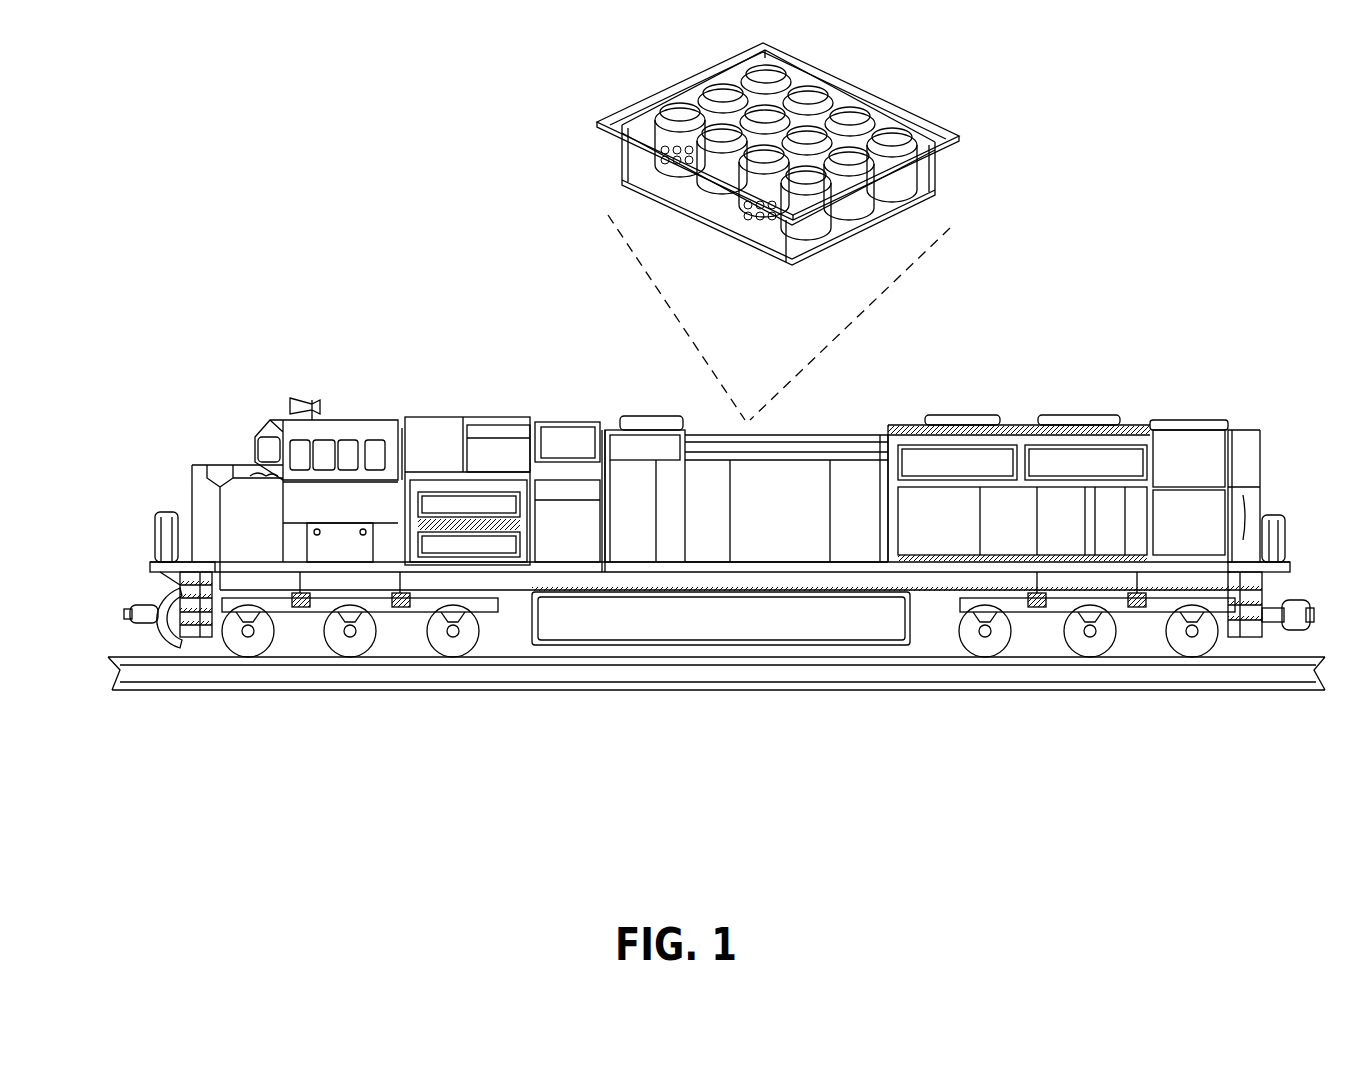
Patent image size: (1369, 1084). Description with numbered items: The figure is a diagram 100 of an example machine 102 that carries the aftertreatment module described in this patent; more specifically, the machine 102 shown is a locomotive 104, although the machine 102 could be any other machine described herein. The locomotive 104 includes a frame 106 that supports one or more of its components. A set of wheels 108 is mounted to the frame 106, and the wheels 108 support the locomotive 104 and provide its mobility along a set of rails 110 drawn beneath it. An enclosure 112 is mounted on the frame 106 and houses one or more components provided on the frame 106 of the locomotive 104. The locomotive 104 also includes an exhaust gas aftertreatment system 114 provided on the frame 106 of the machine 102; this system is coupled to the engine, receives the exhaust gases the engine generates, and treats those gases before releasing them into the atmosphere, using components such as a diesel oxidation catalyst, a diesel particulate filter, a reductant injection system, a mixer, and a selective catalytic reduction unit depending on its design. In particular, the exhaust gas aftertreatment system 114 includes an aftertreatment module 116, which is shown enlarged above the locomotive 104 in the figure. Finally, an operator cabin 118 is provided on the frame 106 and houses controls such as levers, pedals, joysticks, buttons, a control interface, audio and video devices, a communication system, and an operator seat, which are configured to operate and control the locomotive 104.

The diagram 100 is at (182, 87).
The machine 102 is at (1067, 228).
The locomotive 104 is at (962, 342).
The frame 106 is at (572, 577).
The wheels 108 is at (245, 650).
The rails 110 is at (822, 690).
The enclosure 112 is at (705, 512).
The exhaust gas aftertreatment system 114 is at (813, 455).
The aftertreatment module 116 is at (622, 87).
The operator cabin 118 is at (343, 440).